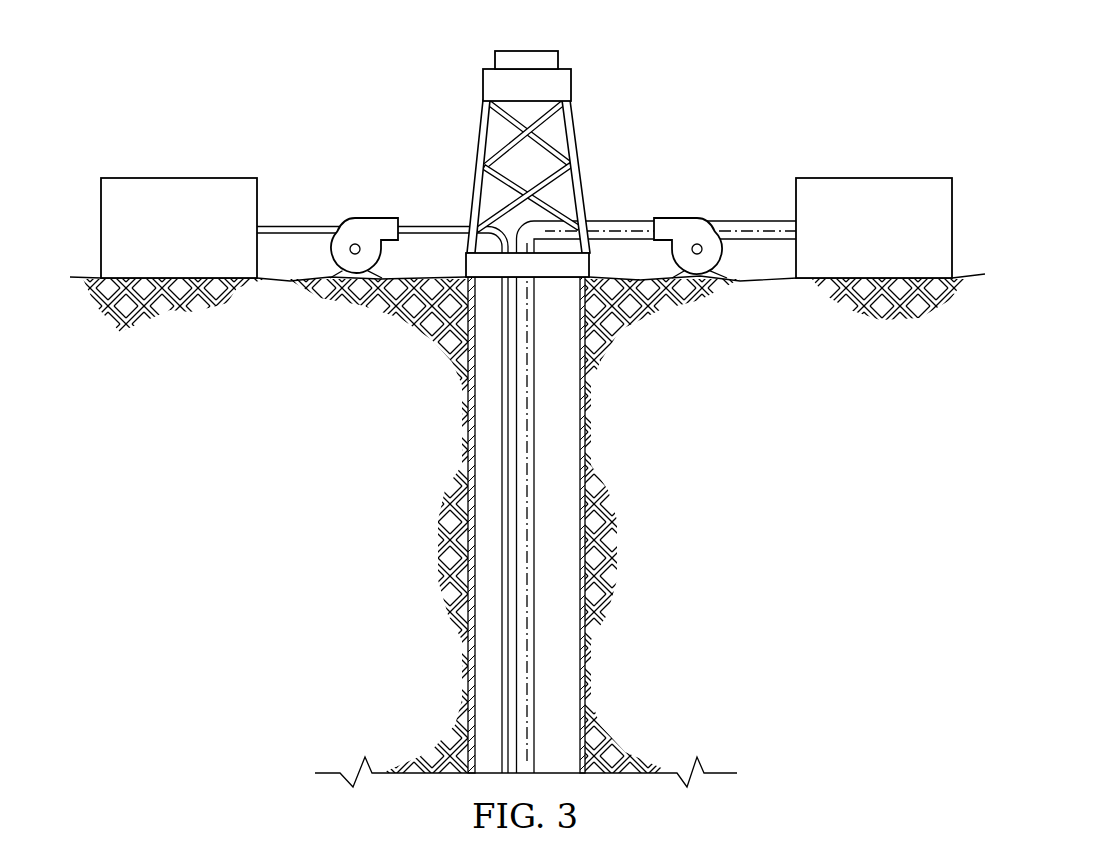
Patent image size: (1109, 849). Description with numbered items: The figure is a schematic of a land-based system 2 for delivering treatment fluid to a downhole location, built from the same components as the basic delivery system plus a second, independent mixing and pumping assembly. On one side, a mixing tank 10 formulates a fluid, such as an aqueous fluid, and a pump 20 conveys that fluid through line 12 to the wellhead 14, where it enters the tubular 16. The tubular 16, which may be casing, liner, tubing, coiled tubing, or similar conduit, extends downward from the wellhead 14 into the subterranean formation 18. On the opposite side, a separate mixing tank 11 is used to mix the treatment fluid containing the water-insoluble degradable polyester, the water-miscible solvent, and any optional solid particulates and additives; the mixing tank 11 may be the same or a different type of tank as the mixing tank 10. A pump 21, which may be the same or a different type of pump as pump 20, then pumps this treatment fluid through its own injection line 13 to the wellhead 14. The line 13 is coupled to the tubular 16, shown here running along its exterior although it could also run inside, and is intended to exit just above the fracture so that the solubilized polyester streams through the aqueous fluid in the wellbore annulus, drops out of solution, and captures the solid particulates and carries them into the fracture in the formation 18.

The system 2 is at (416, 78).
The mixing tank 10 is at (873, 178).
The mixing tank 11 is at (178, 178).
The line 12 is at (625, 221).
The injection line 13 is at (433, 226).
The wellhead 14 is at (466, 265).
The tubular 16 is at (535, 690).
The subterranean formation 18 is at (435, 528).
The pump 20 is at (695, 218).
The pump 21 is at (355, 218).